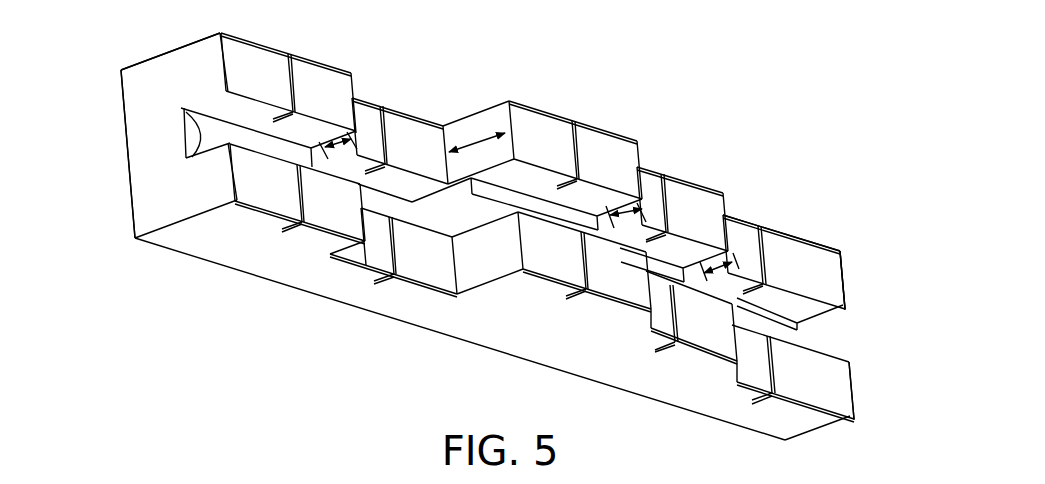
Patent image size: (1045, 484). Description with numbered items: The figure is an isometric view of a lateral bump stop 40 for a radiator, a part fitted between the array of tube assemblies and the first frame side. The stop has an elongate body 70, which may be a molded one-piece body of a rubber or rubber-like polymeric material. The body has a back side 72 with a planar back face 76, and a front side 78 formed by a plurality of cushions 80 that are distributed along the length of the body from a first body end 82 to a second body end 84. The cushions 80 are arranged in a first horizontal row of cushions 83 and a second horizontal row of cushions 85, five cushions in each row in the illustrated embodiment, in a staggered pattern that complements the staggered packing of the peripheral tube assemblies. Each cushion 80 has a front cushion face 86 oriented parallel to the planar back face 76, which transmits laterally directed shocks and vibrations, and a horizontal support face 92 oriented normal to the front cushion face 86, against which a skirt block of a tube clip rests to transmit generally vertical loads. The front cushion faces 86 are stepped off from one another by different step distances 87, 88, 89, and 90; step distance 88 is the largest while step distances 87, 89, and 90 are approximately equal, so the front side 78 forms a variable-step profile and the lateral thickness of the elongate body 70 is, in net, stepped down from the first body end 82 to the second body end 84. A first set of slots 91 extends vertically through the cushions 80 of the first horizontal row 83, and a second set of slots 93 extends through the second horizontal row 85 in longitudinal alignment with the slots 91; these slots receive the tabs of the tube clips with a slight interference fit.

The lateral bump stop 40 is at (888, 142).
The elongate body 70 is at (130, 237).
The back side 72 is at (118, 152).
The planar back face 76 is at (118, 82).
The front side 78 is at (822, 270).
The cushion 80 is at (262, 55).
The first body end 82 is at (155, 75).
The first horizontal row of cushions 83 is at (860, 403).
The second body end 84 is at (853, 372).
The second horizontal row of cushions 85 is at (858, 282).
The front cushion face 86 is at (245, 190).
The step distance 87 is at (342, 138).
The step distance 88 is at (465, 140).
The step distance 89 is at (627, 206).
The step distance 90 is at (716, 276).
The slot 91 is at (298, 224).
The horizontal support face 92 is at (198, 130).
The slot 93 is at (289, 58).